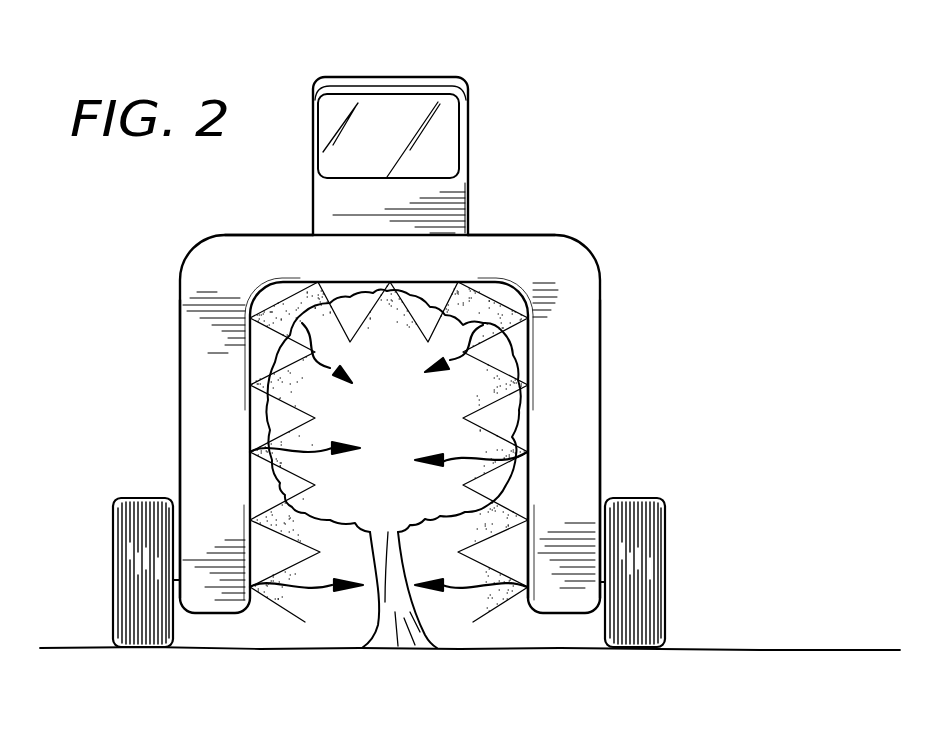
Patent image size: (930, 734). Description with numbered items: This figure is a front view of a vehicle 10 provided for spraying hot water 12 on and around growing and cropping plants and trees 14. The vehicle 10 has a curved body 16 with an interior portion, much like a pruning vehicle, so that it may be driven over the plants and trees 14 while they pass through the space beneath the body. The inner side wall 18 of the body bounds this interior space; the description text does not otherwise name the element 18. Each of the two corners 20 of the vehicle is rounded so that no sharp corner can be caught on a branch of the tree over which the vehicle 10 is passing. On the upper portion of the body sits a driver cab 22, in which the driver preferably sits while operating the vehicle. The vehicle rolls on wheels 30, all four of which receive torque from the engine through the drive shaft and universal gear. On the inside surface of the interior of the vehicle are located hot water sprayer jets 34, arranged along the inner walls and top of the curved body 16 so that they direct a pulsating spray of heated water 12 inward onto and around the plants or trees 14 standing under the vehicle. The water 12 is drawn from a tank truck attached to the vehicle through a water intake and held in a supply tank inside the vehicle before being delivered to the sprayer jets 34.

The vehicle 10 is at (178, 280).
The hot water 12 is at (462, 300).
The plants and trees 14 is at (308, 397).
The curved body 16 is at (222, 236).
The inner side wall 18 is at (503, 355).
The corners 20 is at (188, 258).
The driver cab 22 is at (393, 77).
The wheels 30 is at (133, 543).
The hot water sprayer jets 34 is at (250, 450).